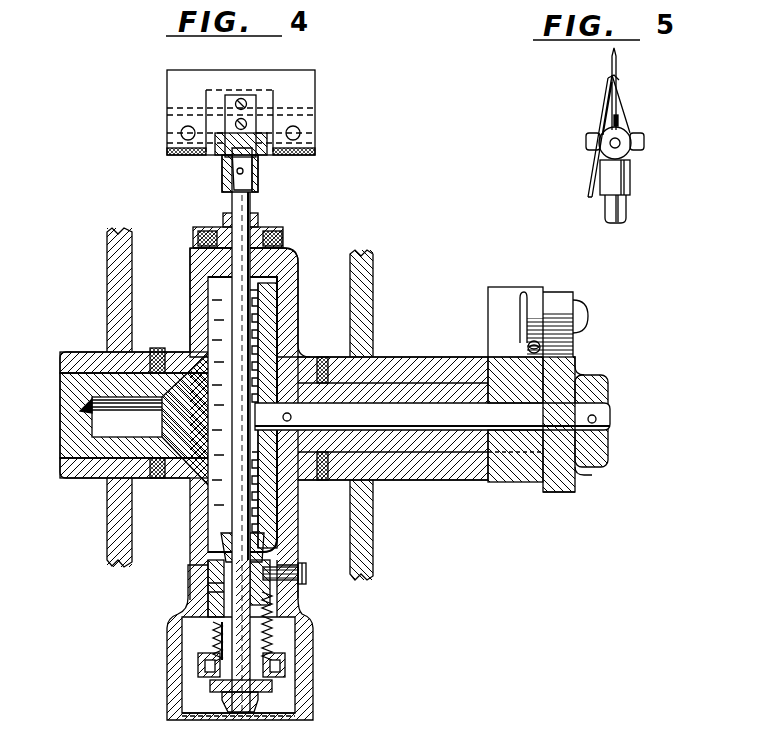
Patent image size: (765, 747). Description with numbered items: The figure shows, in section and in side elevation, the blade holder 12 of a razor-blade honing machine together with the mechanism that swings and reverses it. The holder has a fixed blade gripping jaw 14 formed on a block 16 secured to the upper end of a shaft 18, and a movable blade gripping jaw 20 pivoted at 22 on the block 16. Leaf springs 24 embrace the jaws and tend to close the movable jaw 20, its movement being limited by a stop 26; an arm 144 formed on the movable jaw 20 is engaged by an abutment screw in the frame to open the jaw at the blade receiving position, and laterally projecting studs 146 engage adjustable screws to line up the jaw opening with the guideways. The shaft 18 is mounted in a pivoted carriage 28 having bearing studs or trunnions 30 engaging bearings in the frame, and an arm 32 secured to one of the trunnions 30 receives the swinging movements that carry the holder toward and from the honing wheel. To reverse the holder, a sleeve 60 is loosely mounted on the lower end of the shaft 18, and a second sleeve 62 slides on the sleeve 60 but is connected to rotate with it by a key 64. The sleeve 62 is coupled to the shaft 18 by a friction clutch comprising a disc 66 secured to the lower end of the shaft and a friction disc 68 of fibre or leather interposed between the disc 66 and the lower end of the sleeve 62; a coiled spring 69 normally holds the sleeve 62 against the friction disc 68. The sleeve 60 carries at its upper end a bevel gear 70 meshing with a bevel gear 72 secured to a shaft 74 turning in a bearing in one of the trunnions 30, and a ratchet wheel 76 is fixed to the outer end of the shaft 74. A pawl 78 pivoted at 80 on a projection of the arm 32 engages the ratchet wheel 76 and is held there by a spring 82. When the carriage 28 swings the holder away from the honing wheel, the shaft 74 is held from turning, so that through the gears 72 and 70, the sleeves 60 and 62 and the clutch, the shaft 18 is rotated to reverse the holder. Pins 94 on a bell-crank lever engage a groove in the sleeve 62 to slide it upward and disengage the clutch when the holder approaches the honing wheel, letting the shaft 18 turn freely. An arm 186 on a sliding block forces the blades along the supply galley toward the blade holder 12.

In FIG. 5, the blade holder 12 is at (552, 128).
In FIG. 5, the fixed blade gripping jaw 14 is at (618, 88).
In FIG. 4, the block 16 is at (259, 176).
In FIG. 5, the block 16 is at (631, 178).
In FIG. 4, the shaft 18 is at (254, 211).
In FIG. 5, the shaft 18 is at (627, 212).
In FIG. 4, the movable blade gripping jaw 20 is at (282, 78).
In FIG. 5, the movable blade gripping jaw 20 is at (610, 80).
In FIG. 4, the pivot 22 is at (300, 120).
In FIG. 5, the pivot 22 is at (622, 138).
In FIG. 4, the leaf springs 24 is at (177, 90).
In FIG. 5, the leaf springs 24 is at (604, 106).
In FIG. 5, the stop 26 is at (620, 118).
In FIG. 4, the pivoted carriage 28 is at (290, 266).
In FIG. 4, the bearing studs or trunnions 30 is at (70, 440).
In FIG. 4, the arm 32 is at (506, 481).
In FIG. 4, the sleeve 60 is at (212, 580).
In FIG. 4, the second sleeve 62 is at (300, 640).
In FIG. 4, the key 64 is at (213, 640).
In FIG. 4, the disc 66 is at (222, 696).
In FIG. 4, the friction disc 68 is at (273, 688).
In FIG. 4, the coiled spring 69 is at (268, 644).
In FIG. 4, the bevel gear 70 is at (228, 538).
In FIG. 4, the bevel gear 72 is at (268, 306).
In FIG. 4, the shaft 74 is at (605, 412).
In FIG. 4, the ratchet wheel 76 is at (580, 376).
In FIG. 4, the pawl 78 is at (556, 292).
In FIG. 4, the pivot 80 is at (588, 316).
In FIG. 4, the spring 82 is at (527, 345).
In FIG. 4, the pins 94 is at (286, 670).
In FIG. 4, the arm 144 is at (226, 164).
In FIG. 5, the arm 144 is at (592, 172).
In FIG. 4, the laterally projecting studs 146 is at (182, 130).
In FIG. 5, the laterally projecting studs 146 is at (645, 142).
In FIG. 4, the arm 186 is at (200, 746).